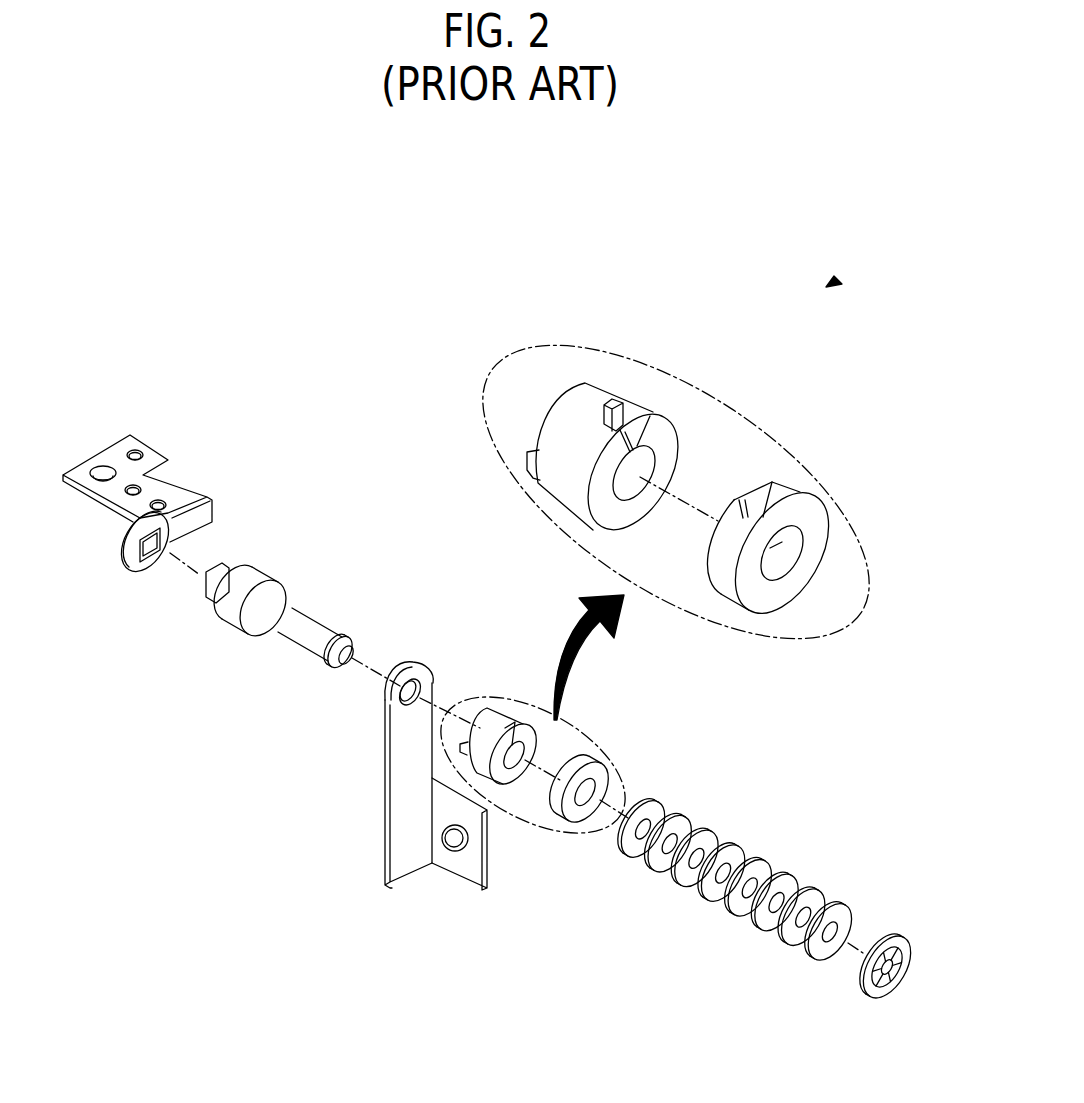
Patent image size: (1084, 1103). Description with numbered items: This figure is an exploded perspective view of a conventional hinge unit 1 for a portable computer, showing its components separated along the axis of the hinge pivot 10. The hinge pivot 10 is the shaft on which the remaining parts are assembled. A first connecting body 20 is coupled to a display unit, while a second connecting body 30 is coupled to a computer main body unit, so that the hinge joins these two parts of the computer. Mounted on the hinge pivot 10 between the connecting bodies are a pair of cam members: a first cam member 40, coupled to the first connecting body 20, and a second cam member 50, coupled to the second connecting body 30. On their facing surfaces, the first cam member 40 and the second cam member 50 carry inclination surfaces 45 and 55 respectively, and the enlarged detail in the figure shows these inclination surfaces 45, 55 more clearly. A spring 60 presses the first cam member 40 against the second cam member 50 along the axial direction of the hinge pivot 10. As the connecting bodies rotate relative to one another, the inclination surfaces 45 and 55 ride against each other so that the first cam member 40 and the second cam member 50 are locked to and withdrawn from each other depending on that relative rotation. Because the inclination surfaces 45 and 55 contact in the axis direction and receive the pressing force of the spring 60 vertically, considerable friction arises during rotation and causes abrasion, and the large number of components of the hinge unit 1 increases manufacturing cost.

The hinge unit 1 is at (826, 287).
The hinge pivot 10 is at (307, 620).
The first connecting body 20 is at (157, 457).
The second connecting body 30 is at (407, 872).
The first cam member 40 is at (822, 522).
The inclination surface 45 is at (760, 480).
The second cam member 50 is at (585, 387).
The inclination surface 55 is at (638, 427).
The spring 60 is at (630, 856).